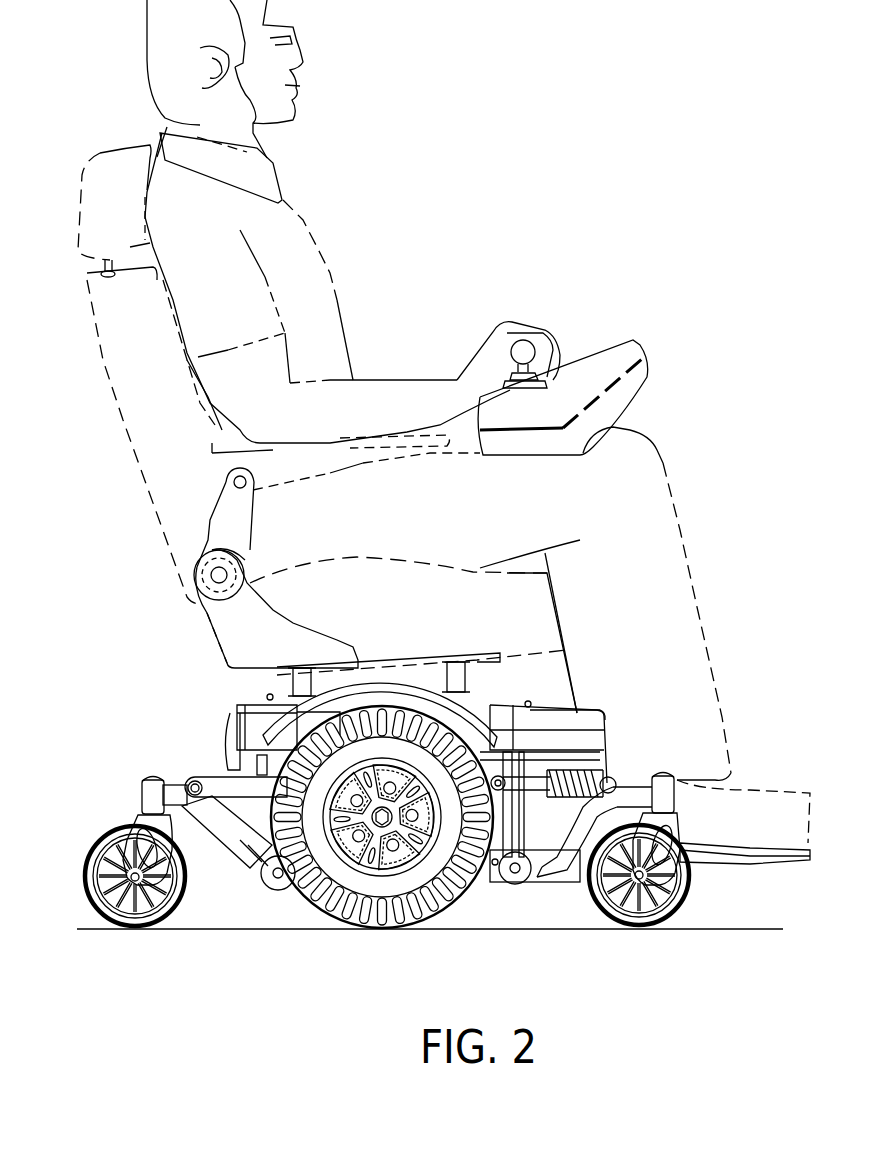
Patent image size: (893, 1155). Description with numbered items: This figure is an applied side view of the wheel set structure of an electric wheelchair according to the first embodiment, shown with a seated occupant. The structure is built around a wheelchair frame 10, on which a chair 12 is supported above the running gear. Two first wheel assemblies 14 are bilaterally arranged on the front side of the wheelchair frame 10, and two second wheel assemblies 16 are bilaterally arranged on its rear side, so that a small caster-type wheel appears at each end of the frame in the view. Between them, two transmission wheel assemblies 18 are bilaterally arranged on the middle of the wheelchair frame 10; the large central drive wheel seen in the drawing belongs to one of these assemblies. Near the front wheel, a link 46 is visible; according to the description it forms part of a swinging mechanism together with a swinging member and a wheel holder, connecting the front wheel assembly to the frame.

The wheelchair frame 10 is at (494, 891).
The chair 12 is at (147, 413).
The first wheel assembly 14 is at (100, 926).
The second wheel assembly 16 is at (683, 919).
The transmission wheel assembly 18 is at (318, 924).
The link 46 is at (215, 785).